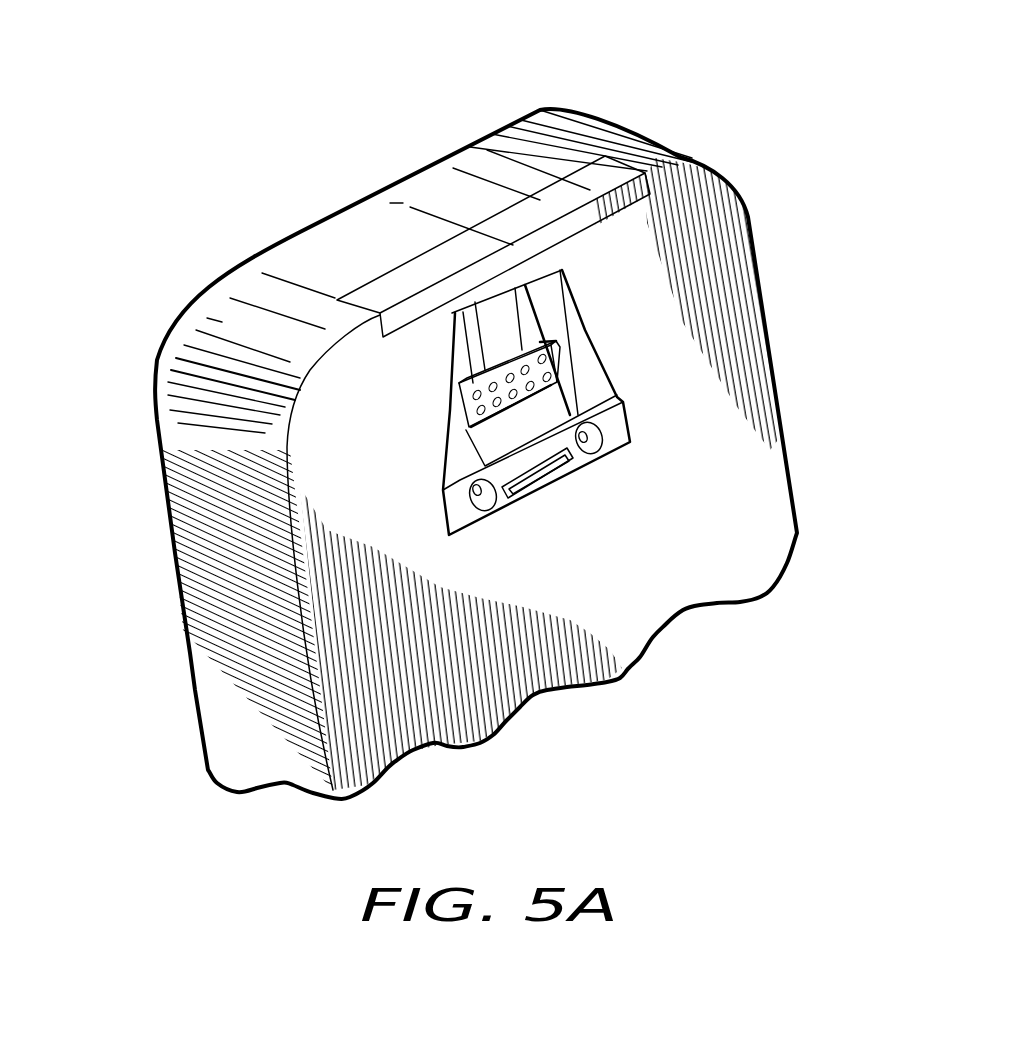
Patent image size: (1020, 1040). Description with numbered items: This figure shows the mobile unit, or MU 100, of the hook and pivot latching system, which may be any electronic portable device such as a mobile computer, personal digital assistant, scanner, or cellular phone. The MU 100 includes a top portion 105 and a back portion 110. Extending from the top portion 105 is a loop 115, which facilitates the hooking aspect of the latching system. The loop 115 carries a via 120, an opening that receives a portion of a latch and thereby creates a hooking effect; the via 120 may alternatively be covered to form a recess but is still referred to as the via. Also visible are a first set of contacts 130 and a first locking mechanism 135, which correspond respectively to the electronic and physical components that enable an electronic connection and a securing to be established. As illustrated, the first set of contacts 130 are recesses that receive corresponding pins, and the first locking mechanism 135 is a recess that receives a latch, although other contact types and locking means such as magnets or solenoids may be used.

The MU 100 is at (262, 189).
The top portion 105 is at (380, 223).
The back portion 110 is at (750, 500).
The loop 115 is at (545, 243).
The via 120 is at (560, 271).
The first set of contacts 130 is at (452, 446).
The first locking mechanism 135 is at (545, 490).